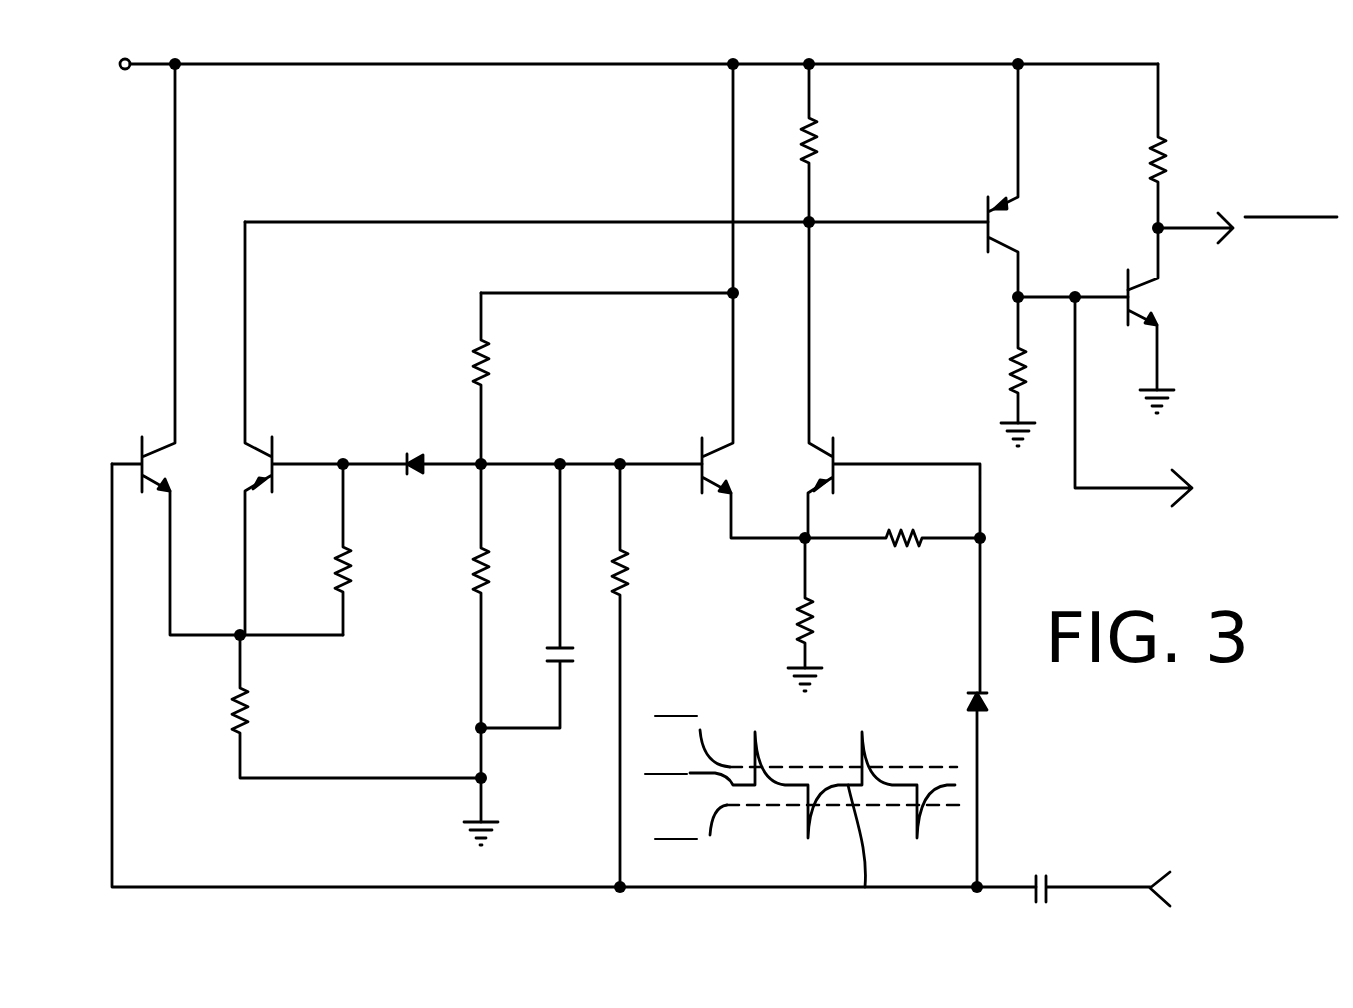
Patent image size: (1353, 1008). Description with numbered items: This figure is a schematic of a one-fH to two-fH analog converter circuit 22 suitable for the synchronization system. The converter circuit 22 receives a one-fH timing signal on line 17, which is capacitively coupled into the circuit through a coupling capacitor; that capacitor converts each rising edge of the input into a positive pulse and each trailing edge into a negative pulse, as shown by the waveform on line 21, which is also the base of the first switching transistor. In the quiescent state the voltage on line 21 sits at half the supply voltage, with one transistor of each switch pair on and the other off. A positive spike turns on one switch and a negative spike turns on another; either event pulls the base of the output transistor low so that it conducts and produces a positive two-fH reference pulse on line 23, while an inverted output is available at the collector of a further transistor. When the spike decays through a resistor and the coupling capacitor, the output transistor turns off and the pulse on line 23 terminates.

The line 17 is at (1112, 887).
The line 21 is at (893, 887).
The 1fH to 2fH converter circuit 22 is at (432, 159).
The line 23 is at (1105, 488).